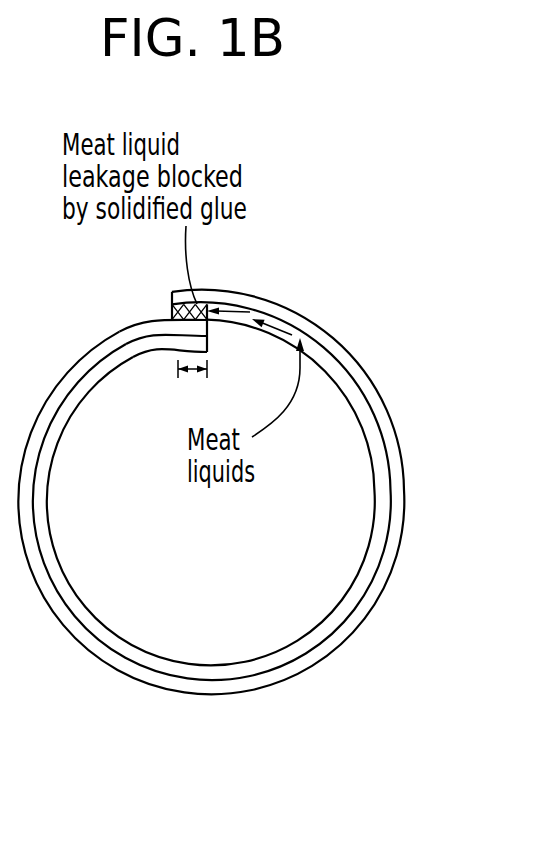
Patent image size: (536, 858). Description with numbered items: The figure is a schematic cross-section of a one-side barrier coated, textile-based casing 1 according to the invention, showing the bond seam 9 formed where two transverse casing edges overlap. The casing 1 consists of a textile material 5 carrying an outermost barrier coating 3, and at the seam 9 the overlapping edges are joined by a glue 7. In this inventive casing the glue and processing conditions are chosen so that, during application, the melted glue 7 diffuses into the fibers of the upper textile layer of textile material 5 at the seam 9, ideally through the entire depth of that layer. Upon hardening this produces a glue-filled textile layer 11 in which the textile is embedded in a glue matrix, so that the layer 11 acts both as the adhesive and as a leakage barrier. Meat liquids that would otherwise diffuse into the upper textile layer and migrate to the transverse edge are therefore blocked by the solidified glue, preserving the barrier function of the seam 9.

The casing 1 is at (341, 312).
The barrier coating 3 is at (261, 306).
The textile material 5 is at (381, 483).
The glue 7 is at (208, 320).
The seam 9 is at (192, 355).
The glue-filled textile layer 11 is at (172, 310).